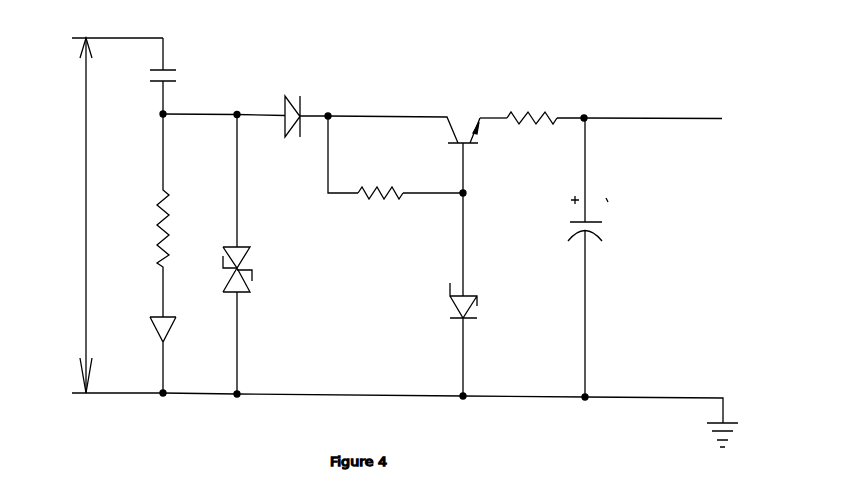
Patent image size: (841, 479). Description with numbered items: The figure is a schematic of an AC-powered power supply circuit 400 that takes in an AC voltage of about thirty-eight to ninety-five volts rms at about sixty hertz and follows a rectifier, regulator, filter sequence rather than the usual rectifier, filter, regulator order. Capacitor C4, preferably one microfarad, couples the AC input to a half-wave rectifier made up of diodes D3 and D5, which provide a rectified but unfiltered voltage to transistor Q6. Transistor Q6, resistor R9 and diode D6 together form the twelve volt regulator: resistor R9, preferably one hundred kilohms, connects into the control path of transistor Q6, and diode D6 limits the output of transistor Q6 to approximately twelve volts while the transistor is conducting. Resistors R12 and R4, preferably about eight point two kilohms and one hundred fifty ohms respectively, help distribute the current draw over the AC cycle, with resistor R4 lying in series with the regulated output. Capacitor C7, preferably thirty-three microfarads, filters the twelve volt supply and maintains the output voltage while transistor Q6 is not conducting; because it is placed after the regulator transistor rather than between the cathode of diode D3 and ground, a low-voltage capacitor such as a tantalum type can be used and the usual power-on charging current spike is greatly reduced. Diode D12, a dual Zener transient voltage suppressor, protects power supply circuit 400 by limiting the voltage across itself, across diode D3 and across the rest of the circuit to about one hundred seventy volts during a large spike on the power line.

The power supply circuit 400 is at (652, 70).
The capacitor C4 is at (177, 76).
The resistor R12 is at (177, 215).
The diode D5 is at (175, 355).
The diode D12 is at (258, 255).
The diode D3 is at (291, 90).
The resistor R9 is at (380, 208).
The transistor Q6 is at (464, 124).
The resistor R4 is at (532, 92).
The diode D6 is at (445, 294).
The capacitor C7 is at (600, 257).